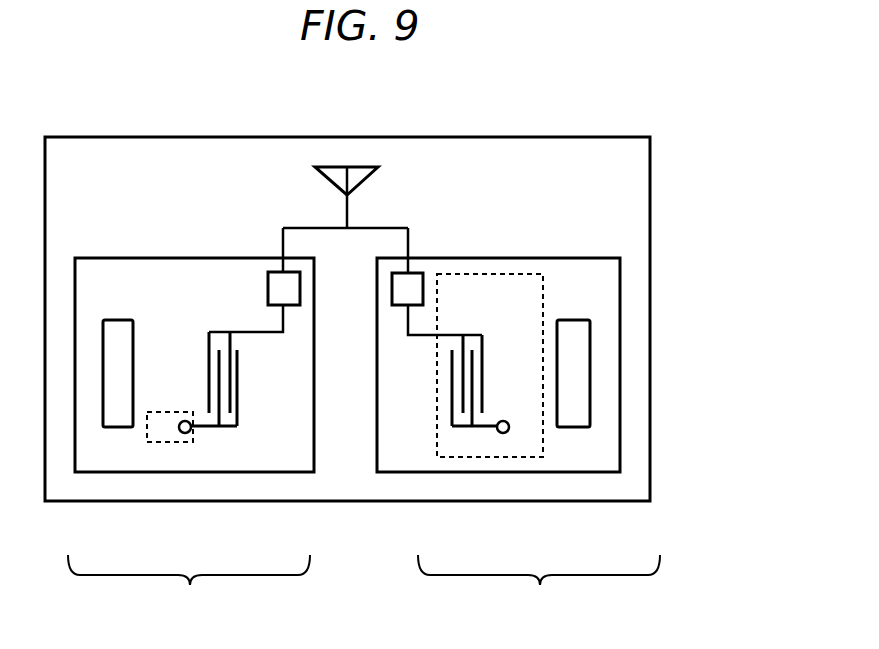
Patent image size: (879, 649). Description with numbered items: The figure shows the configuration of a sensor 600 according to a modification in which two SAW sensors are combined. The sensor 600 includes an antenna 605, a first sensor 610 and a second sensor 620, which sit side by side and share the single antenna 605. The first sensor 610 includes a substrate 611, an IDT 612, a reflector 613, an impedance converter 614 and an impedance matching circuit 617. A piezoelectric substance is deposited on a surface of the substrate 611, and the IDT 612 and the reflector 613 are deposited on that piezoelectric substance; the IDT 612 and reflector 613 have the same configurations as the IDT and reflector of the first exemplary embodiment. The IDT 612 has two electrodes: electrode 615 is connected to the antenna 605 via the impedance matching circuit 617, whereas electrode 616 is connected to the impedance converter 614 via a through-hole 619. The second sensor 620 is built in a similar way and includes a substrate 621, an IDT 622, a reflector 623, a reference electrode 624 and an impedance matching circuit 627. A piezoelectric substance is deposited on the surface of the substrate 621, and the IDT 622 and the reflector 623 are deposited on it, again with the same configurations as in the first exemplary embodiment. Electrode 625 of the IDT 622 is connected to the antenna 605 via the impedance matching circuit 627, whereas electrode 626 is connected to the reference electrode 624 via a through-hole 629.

The sensor 600 is at (700, 192).
The antenna 605 is at (378, 167).
The first sensor 610 is at (189, 591).
The substrate 611 is at (153, 257).
The IDT 612 is at (258, 424).
The reflector 613 is at (118, 320).
The impedance converter 614 is at (160, 443).
The electrode 615 is at (231, 333).
The electrode 616 is at (220, 430).
The impedance matching circuit 617 is at (269, 274).
The through-hole 619 is at (185, 434).
The second sensor 620 is at (539, 589).
The substrate 621 is at (538, 258).
The IDT 622 is at (503, 403).
The reflector 623 is at (590, 298).
The reference electrode 624 is at (507, 457).
The electrode 625 is at (470, 334).
The electrode 626 is at (457, 430).
The impedance matching circuit 627 is at (423, 276).
The through-hole 629 is at (505, 434).